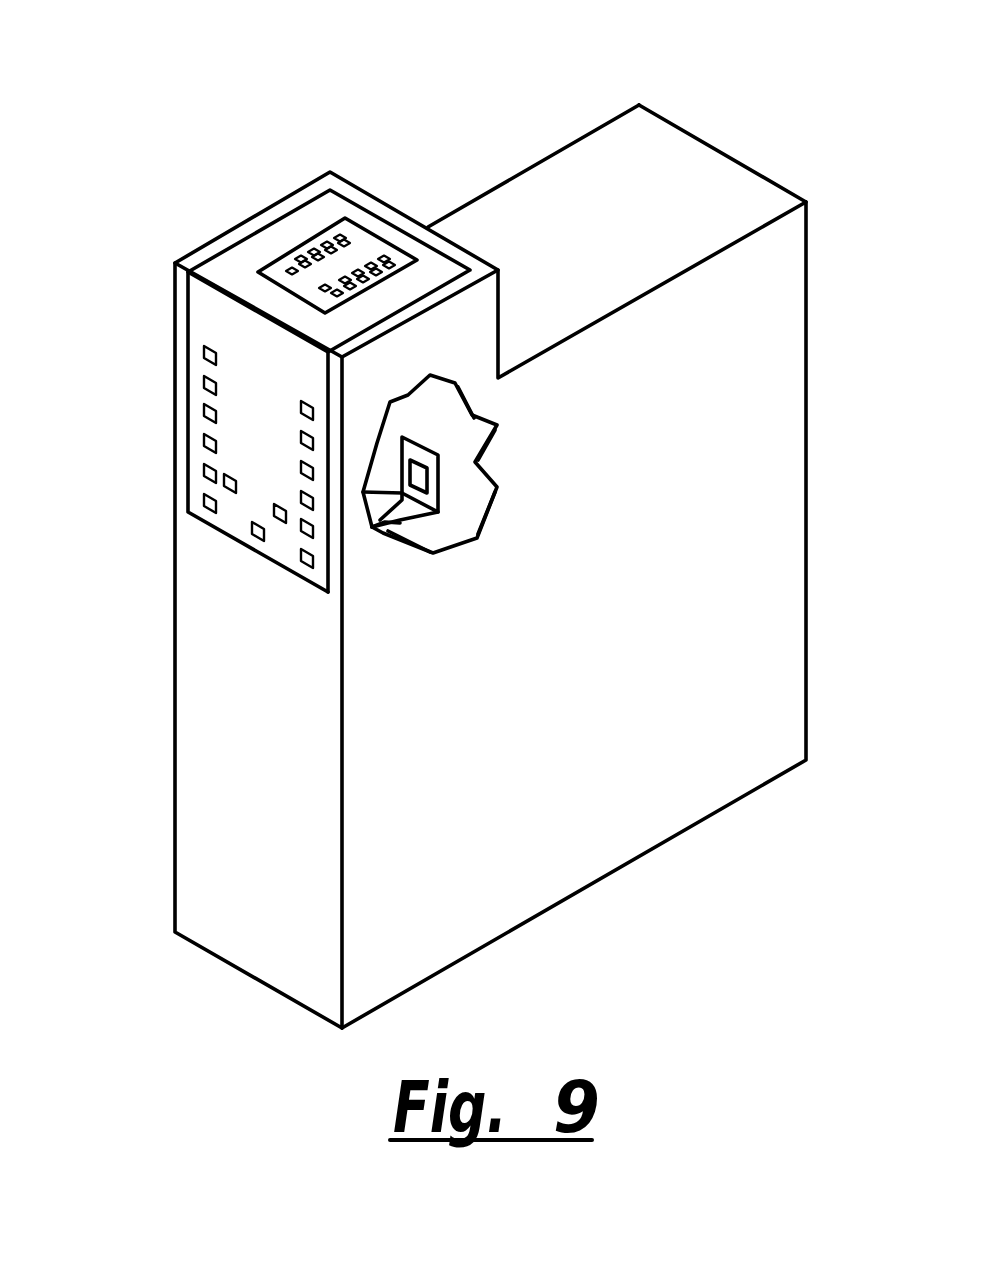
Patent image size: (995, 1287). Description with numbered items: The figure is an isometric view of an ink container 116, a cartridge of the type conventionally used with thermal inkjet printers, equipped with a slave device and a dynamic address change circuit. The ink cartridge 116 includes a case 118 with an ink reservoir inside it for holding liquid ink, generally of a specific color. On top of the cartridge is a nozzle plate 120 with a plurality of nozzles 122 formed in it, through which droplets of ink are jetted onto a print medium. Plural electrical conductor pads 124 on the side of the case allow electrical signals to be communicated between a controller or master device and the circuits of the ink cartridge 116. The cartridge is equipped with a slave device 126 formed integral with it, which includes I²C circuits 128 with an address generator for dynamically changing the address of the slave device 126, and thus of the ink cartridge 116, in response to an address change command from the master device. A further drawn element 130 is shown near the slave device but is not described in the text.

The ink container 116 is at (748, 78).
The case 118 is at (540, 653).
The nozzle plate 120 is at (362, 243).
The nozzles 122 is at (333, 282).
The electrical conductor pads 124 is at (305, 437).
The slave device 126 is at (428, 478).
The I²C circuits 128 is at (420, 472).
The connector tab 130 is at (400, 525).